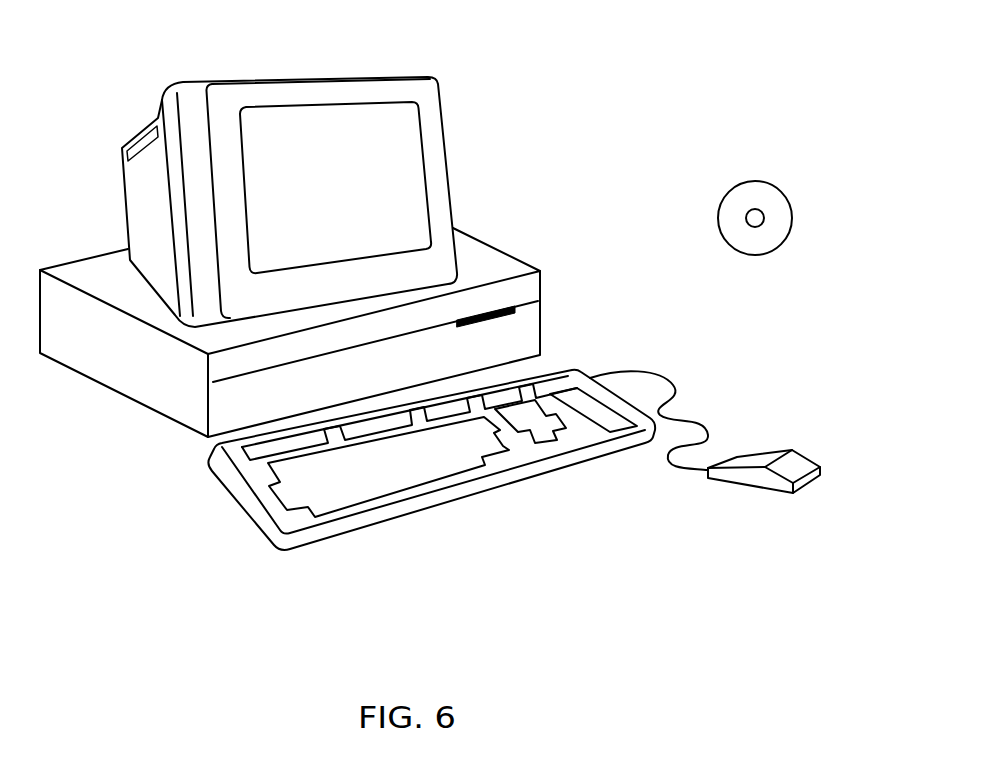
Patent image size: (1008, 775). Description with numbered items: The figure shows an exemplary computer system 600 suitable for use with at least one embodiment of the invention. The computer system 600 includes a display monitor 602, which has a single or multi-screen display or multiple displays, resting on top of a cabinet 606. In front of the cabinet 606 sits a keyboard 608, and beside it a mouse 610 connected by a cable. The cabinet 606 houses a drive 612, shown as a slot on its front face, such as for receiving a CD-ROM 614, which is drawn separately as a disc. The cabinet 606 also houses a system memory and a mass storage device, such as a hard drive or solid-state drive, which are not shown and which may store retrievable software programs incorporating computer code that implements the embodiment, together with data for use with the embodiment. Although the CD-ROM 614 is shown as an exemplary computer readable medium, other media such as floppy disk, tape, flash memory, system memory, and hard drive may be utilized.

The computer system 600 is at (674, 58).
The display monitor 602 is at (450, 200).
The cabinet 606 is at (175, 421).
The keyboard 608 is at (407, 147).
The mouse 610 is at (810, 453).
The drive 612 is at (514, 302).
The CD-ROM 614 is at (776, 186).